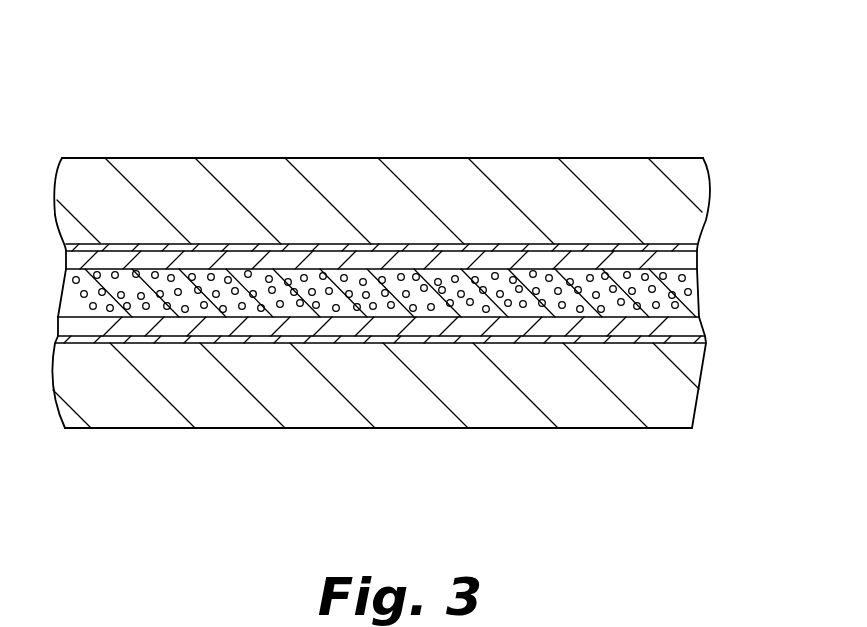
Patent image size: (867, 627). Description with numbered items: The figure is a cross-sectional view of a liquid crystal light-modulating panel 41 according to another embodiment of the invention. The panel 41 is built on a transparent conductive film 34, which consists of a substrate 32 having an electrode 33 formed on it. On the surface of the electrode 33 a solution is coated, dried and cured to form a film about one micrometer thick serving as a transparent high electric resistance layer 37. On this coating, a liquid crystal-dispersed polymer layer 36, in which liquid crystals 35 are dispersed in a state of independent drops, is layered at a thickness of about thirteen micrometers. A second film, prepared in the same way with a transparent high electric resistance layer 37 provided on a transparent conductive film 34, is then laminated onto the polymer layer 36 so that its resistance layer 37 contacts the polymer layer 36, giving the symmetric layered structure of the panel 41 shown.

The substrate 32 is at (110, 183).
The electrode 33 is at (200, 244).
The transparent conductive film 34 is at (727, 158).
The liquid crystals 35 is at (270, 283).
The liquid crystal-dispersed polymer layer 36 is at (427, 289).
The transparent high electric resistance layer 37 is at (476, 257).
The liquid crystal light-modulating panel 41 is at (378, 158).